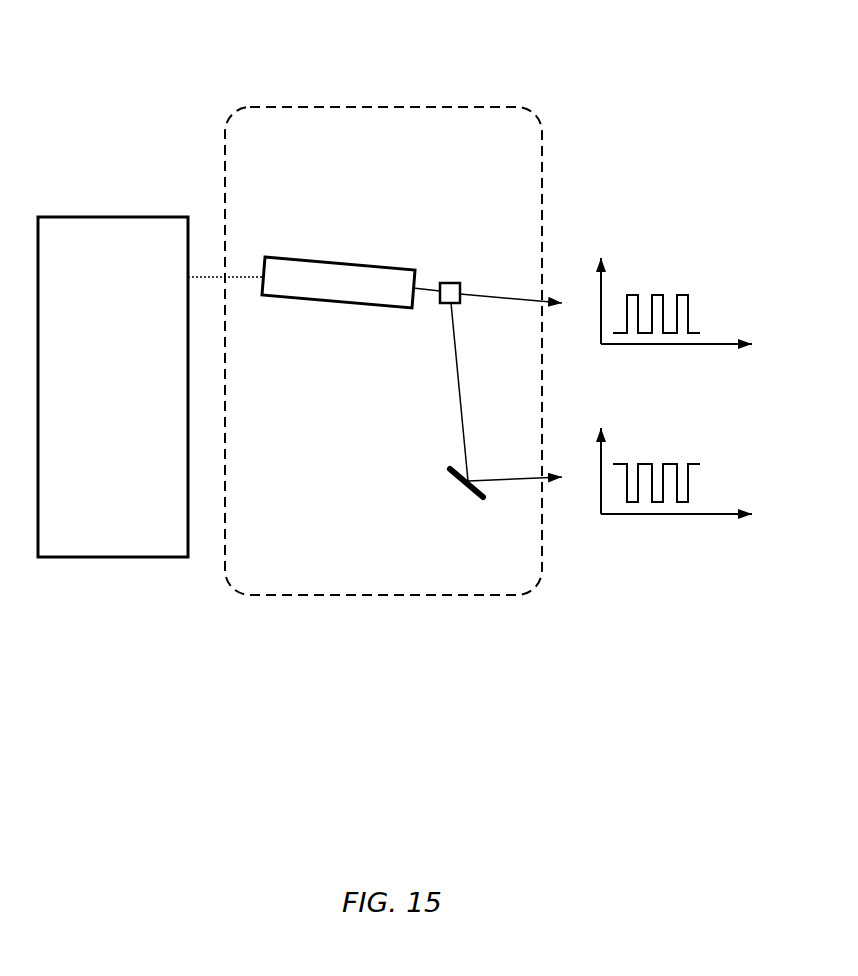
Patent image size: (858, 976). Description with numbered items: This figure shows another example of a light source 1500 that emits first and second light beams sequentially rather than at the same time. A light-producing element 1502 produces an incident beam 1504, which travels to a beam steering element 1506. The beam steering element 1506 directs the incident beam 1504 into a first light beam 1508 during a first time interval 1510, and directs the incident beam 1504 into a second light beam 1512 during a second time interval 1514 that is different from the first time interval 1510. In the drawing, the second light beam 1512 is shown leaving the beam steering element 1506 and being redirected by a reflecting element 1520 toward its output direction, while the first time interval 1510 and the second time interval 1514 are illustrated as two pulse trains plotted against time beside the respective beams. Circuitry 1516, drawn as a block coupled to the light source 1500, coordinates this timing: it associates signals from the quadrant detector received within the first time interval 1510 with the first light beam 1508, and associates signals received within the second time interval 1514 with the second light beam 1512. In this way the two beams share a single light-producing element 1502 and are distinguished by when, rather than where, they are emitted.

The light sensing module 1500 is at (385, 107).
The light-producing element 1502 is at (343, 258).
The incident beam 1504 is at (425, 294).
The beam steering element 1506 is at (450, 283).
The first light beam 1508 is at (495, 293).
The first time interval 1510 is at (660, 295).
The second light beam 1512 is at (497, 483).
The second time interval 1514 is at (670, 463).
The circuitry 1516 is at (117, 217).
The mirror 1520 is at (450, 470).